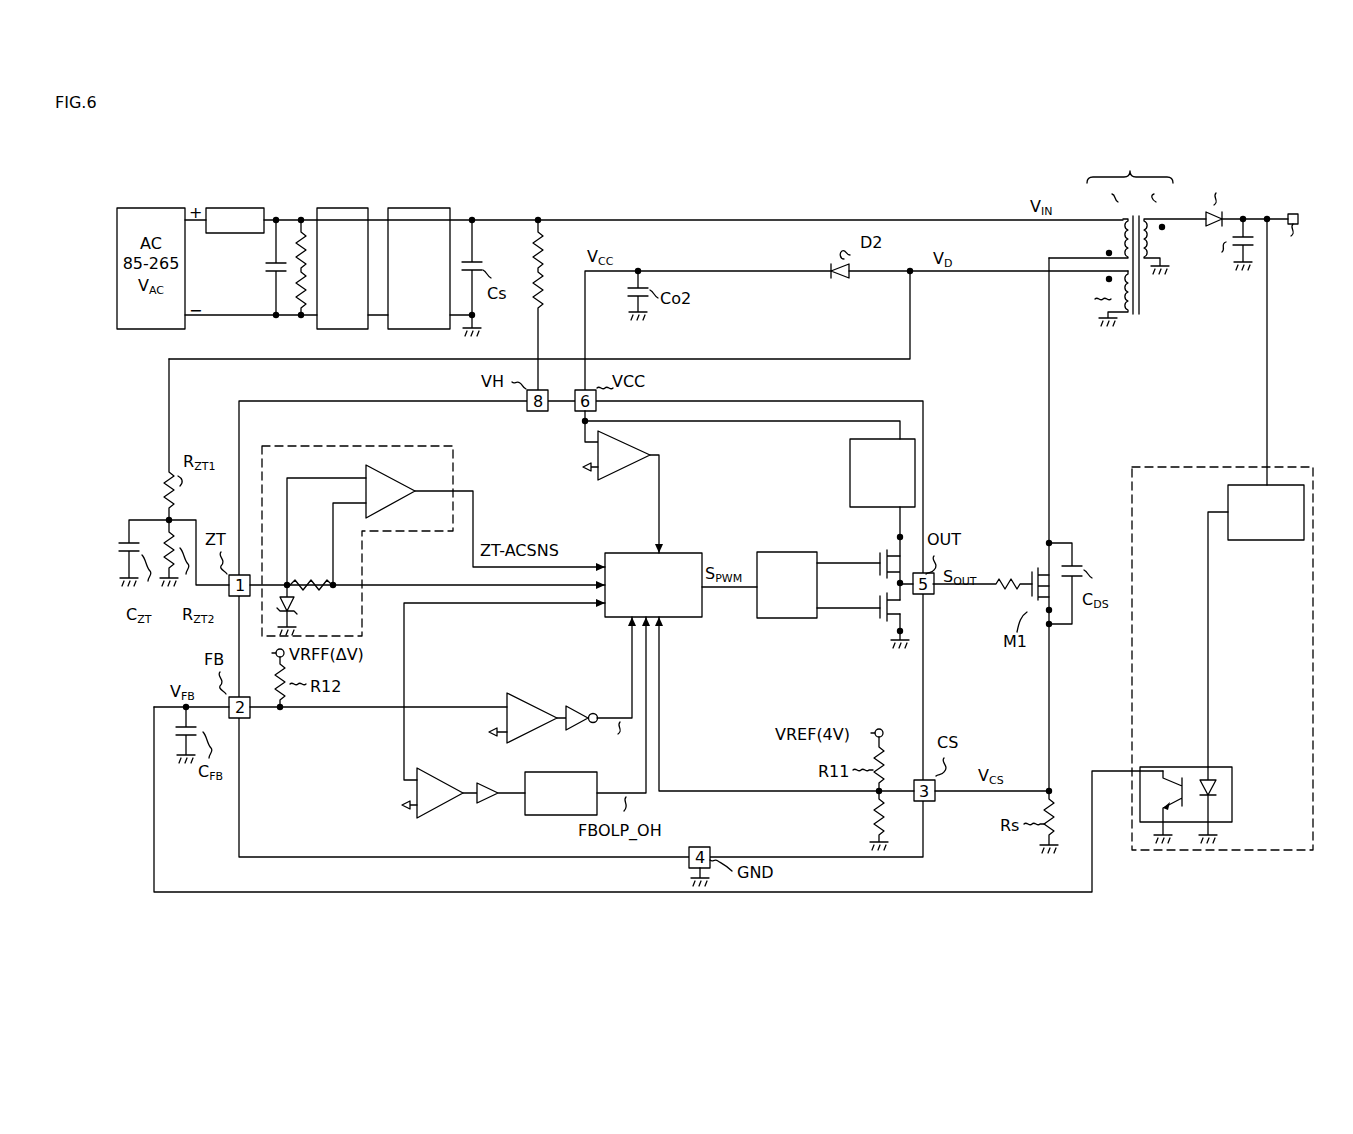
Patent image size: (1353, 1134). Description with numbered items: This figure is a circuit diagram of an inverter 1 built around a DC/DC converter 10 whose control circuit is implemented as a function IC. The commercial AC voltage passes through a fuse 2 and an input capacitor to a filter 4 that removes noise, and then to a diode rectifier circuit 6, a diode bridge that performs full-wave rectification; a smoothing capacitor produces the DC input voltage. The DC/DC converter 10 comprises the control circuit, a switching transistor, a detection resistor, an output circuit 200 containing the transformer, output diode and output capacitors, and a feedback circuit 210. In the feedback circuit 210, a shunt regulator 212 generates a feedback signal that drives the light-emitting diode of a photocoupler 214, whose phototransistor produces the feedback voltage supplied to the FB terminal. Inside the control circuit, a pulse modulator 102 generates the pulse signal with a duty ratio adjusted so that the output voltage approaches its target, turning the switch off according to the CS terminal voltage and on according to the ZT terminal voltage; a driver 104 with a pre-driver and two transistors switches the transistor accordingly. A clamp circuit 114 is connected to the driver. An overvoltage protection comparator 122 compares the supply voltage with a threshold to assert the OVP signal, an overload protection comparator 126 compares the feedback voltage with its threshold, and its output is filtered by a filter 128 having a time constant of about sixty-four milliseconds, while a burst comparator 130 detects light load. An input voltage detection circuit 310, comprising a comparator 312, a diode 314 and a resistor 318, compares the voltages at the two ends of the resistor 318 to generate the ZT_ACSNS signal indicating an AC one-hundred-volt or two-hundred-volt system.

The inverter 1 is at (1318, 899).
The fuse 2 is at (241, 208).
The filter 4 is at (344, 208).
The diode rectifier circuit 6 is at (421, 208).
The DC/DC converter 10 is at (581, 669).
The pulse modulator 102 is at (672, 618).
The driver 104 is at (918, 654).
The clamp circuit 114 is at (850, 470).
The overvoltage protection comparator 122 is at (653, 453).
The overload protection comparator 126 is at (446, 806).
The filter 128 is at (535, 816).
The burst comparator 130 is at (605, 689).
The output circuit 200 is at (802, 331).
The feedback circuit 210 is at (1222, 681).
The shunt regulator 212 is at (1274, 541).
The photocoupler 214 is at (1208, 755).
The input voltage detection circuit 310 is at (433, 527).
The comparator 312 is at (387, 461).
The diode 314 is at (298, 612).
The resistor 318 is at (308, 574).